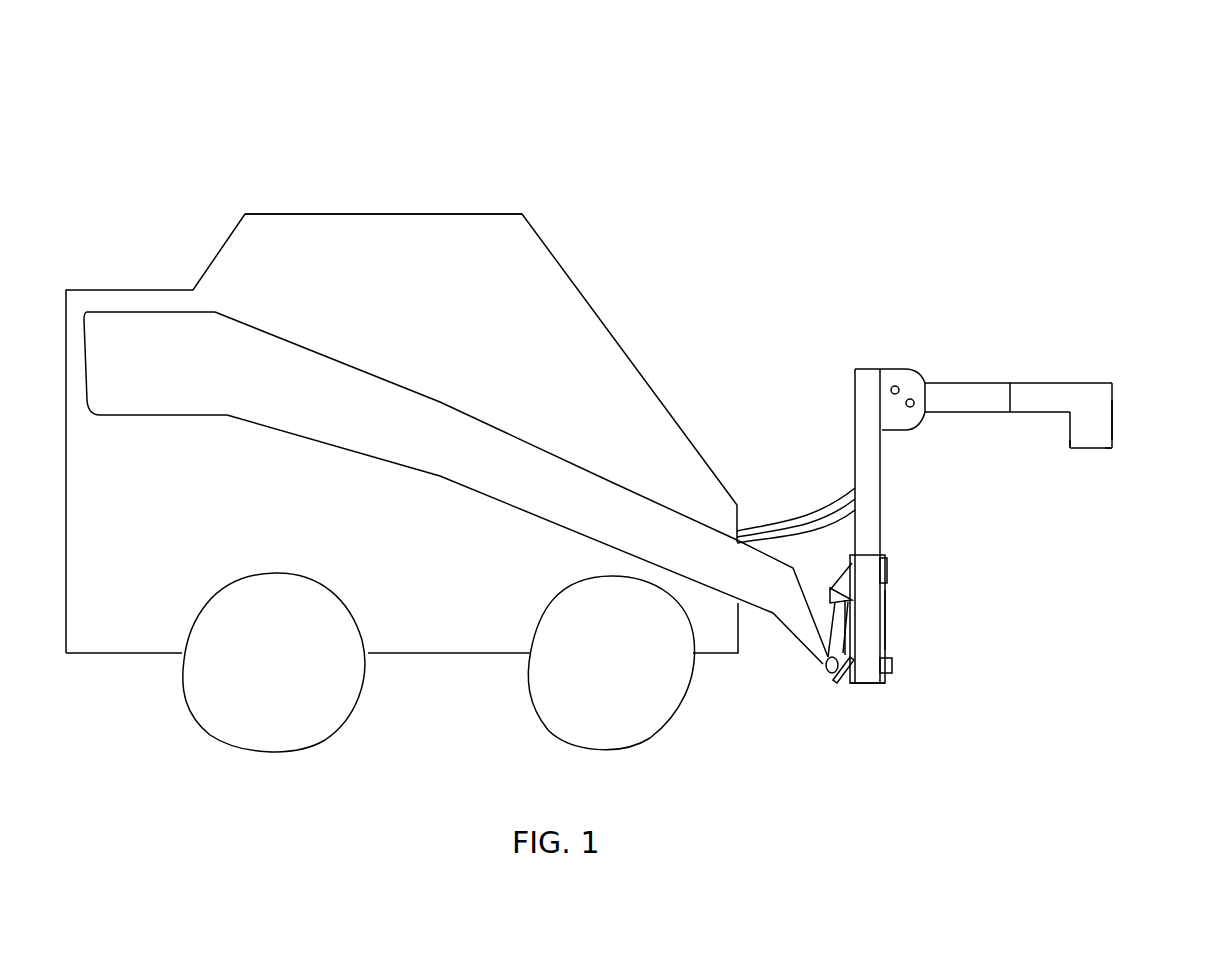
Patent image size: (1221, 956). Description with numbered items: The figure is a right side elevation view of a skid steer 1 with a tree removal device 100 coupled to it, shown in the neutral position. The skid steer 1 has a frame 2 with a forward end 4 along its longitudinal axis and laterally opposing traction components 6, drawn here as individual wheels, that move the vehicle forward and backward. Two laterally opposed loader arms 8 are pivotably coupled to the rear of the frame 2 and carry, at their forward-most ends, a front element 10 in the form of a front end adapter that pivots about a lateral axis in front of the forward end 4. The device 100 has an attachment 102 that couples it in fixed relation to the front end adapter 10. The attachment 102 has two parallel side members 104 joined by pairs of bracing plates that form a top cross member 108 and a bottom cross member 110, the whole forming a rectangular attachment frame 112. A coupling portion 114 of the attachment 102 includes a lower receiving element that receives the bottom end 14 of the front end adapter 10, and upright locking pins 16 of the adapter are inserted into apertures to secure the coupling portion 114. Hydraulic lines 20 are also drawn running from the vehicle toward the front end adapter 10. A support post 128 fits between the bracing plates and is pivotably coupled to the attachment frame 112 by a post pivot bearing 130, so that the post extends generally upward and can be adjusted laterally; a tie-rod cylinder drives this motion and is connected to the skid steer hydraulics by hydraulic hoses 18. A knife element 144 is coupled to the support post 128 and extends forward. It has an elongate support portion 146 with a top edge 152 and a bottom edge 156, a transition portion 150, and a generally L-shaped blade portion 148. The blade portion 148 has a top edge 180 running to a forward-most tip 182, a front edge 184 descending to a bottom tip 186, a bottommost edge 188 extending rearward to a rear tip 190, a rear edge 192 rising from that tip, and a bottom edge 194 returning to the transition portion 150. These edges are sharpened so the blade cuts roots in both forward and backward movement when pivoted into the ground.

The skid steer 1 is at (172, 132).
The frame 2 is at (288, 214).
The forward end 4 is at (717, 695).
The traction components 6 is at (192, 713).
The loader arms 8 is at (145, 338).
The front element 10 is at (818, 720).
The bottom end 14 is at (827, 583).
The locking pins 16 is at (818, 683).
The hydraulic hoses 18 is at (850, 683).
The hydraulic hoses 20 is at (772, 513).
The tree removal device 100 is at (1073, 142).
The attachment 102 is at (1020, 612).
The side members 104 is at (870, 638).
The top cross member 108 is at (978, 570).
The bottom cross member 110 is at (980, 663).
The attachment frame 112 is at (900, 549).
The coupling portion 114 is at (838, 565).
The support post 128 is at (855, 398).
The post pivot bearing 130 is at (892, 673).
The knife element 144 is at (1077, 262).
The support portion 146 is at (968, 318).
The blade portion 148 is at (1090, 317).
The transition portion 150 is at (1012, 345).
The top edge 152 is at (957, 372).
The bottom edge 156 is at (960, 415).
The top edge 180 is at (1040, 378).
The forward-most tip 182 is at (1112, 378).
The front edge 184 is at (1116, 417).
The bottom tip 186 is at (1118, 457).
The bottommost edge 188 is at (1090, 452).
The rear tip 190 is at (1067, 457).
The rear edge 192 is at (1068, 433).
The bottom edge 194 is at (1037, 410).